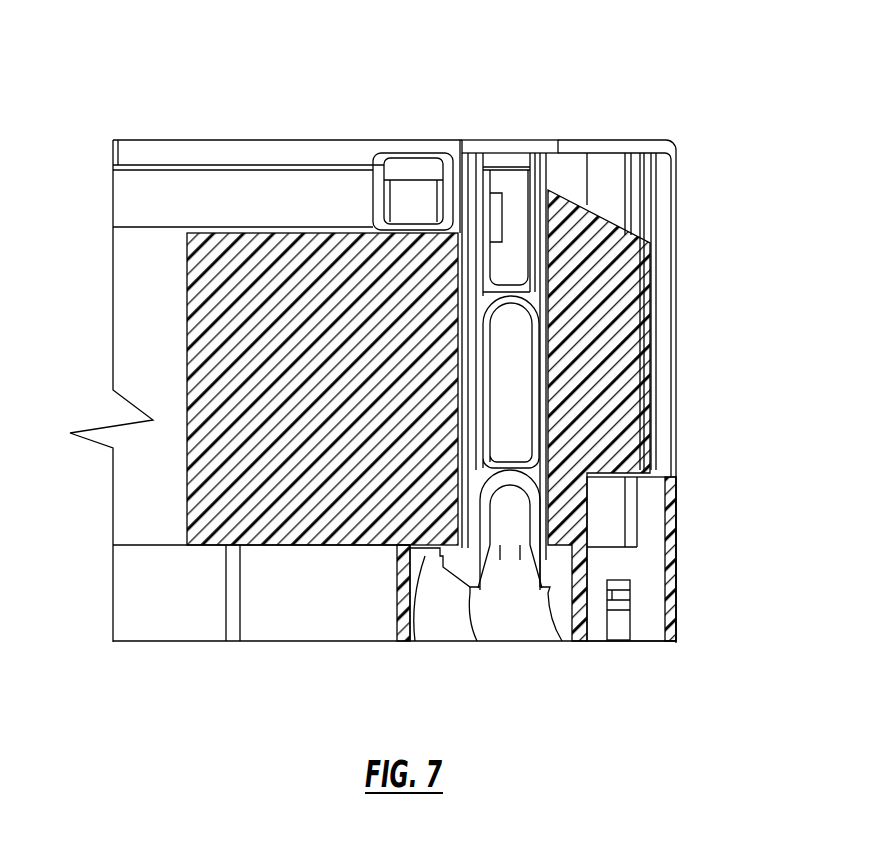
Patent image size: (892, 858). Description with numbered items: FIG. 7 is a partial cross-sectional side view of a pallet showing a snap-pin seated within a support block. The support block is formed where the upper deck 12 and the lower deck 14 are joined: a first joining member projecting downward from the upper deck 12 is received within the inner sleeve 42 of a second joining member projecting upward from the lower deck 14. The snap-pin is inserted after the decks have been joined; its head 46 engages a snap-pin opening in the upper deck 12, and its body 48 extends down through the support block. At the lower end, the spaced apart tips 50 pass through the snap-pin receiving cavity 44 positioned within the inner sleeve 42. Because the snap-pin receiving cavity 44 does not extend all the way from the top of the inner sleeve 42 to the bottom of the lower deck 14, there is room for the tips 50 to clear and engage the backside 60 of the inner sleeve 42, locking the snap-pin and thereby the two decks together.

The upper deck 12 is at (208, 140).
The lower deck 14 is at (172, 641).
The inner sleeve 42 is at (203, 320).
The snap-pin receiving cavity 44 is at (510, 525).
The head 46 is at (530, 140).
The body 48 is at (530, 295).
The spaced apart tips 50 is at (477, 641).
The backside of the inner sleeve 60 is at (415, 641).